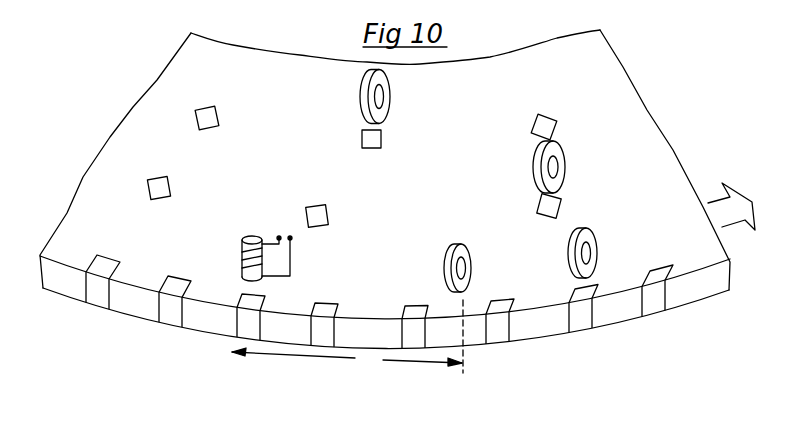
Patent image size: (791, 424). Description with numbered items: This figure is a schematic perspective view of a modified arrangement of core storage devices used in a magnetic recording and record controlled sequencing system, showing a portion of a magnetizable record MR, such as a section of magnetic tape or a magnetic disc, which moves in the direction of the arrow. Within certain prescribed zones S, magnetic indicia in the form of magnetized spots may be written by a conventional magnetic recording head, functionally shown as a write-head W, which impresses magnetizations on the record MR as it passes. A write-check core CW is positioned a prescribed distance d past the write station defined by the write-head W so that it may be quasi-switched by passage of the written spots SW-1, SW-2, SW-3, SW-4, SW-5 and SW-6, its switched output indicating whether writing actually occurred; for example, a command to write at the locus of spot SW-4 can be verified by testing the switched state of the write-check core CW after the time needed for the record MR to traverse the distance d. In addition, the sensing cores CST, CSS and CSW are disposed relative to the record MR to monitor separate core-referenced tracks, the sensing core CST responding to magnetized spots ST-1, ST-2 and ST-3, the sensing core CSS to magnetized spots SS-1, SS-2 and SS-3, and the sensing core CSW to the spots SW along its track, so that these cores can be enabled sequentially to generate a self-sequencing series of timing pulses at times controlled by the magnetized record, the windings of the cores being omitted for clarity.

The magnetized spot ST-1 is at (216, 108).
The magnetized spot ST-2 is at (382, 138).
The magnetized spot ST-3 is at (541, 117).
The magnetized spot SS-1 is at (168, 177).
The magnetized spot SS-2 is at (325, 205).
The magnetized spot SS-3 is at (561, 207).
The sensing core CST is at (390, 91).
The sensing core CSS is at (575, 155).
The write-check core CW is at (473, 254).
The sensing core CSW is at (603, 235).
The write-head W is at (245, 237).
The prescribed zone S is at (97, 307).
The magnetized spot SW-1 is at (253, 343).
The magnetized spot SW-2 is at (328, 350).
The magnetized spot SW-3 is at (415, 352).
The magnetized spot SW-4 is at (503, 348).
The magnetized spot SW-5 is at (585, 338).
The magnetized spot SW-6 is at (655, 320).
The magnetizable record MR is at (720, 291).
The prescribed distance d is at (347, 337).